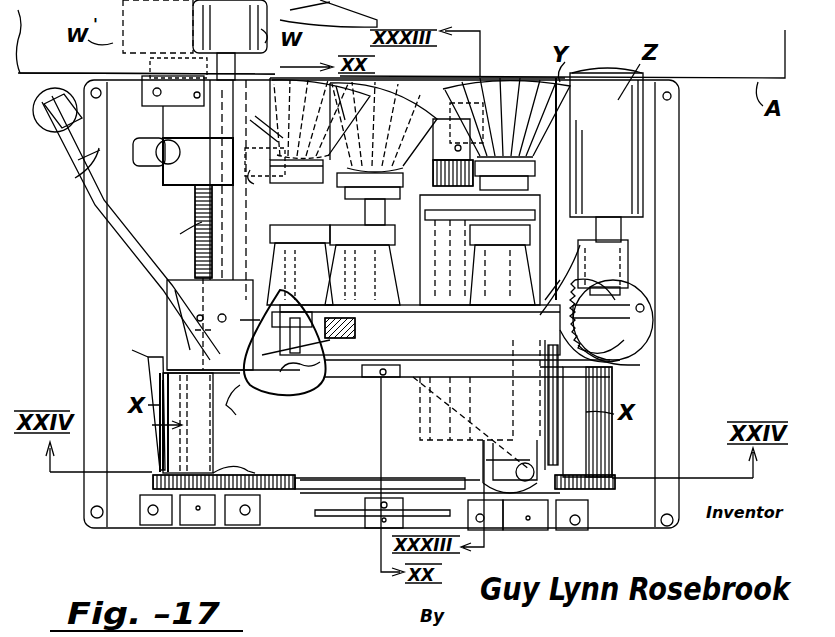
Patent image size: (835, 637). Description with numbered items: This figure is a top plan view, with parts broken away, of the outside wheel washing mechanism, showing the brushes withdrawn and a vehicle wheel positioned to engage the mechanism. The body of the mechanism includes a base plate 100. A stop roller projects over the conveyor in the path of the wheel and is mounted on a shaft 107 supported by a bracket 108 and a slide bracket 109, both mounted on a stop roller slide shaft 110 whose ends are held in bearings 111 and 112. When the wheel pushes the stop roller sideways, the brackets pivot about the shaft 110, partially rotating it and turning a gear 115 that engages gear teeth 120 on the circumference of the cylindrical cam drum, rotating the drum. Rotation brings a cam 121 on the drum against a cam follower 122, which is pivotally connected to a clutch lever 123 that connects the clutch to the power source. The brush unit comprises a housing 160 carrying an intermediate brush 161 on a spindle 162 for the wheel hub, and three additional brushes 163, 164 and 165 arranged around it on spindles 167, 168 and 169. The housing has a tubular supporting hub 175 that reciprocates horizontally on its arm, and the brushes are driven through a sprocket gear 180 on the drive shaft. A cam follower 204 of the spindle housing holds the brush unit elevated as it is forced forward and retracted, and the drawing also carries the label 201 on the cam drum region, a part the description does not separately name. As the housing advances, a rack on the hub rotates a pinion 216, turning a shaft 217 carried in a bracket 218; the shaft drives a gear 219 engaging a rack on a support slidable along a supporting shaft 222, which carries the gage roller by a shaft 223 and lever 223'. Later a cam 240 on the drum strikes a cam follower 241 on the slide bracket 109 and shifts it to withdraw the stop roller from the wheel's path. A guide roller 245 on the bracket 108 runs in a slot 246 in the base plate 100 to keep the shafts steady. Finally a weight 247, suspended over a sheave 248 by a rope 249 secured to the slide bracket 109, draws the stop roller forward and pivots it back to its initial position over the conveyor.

The base plate 100 is at (672, 137).
The shaft 107 is at (186, 68).
The bracket 108 is at (170, 124).
The slide bracket 109 is at (170, 324).
The stop roller slide shaft 110 is at (192, 276).
The bearing 111 is at (142, 74).
The bearing 112 is at (171, 528).
The gear 115 is at (158, 472).
The gear teeth 120 is at (237, 528).
The cam 121 is at (302, 402).
The cam follower 122 is at (289, 393).
The clutch lever 123 is at (268, 150).
The housing 160 is at (333, 332).
The intermediate brush 161 is at (395, 160).
The spindle 162 is at (372, 246).
The brush 163 is at (314, 142).
The brush 164 is at (440, 98).
The brush 165 is at (482, 96).
The spindle 167 is at (302, 265).
The spindle 168 is at (356, 199).
The spindle 169 is at (518, 217).
The tubular supporting hub 175 is at (421, 226).
The sprocket gear 180 is at (347, 529).
The housing 201 is at (450, 405).
The cam follower 204 is at (488, 466).
The pinion 216 is at (590, 326).
The shaft 217 is at (635, 322).
The bracket 218 is at (630, 296).
The gear 219 is at (585, 356).
The supporting shaft 222 is at (558, 533).
The shaft 223 is at (662, 232).
The lever 223' is at (672, 251).
The cam 240 is at (148, 361).
The cam follower 241 is at (231, 408).
The guide roller 245 is at (197, 198).
The slot 246 is at (167, 293).
The weight 247 is at (68, 136).
The sheave 248 is at (74, 172).
The rope 249 is at (88, 240).